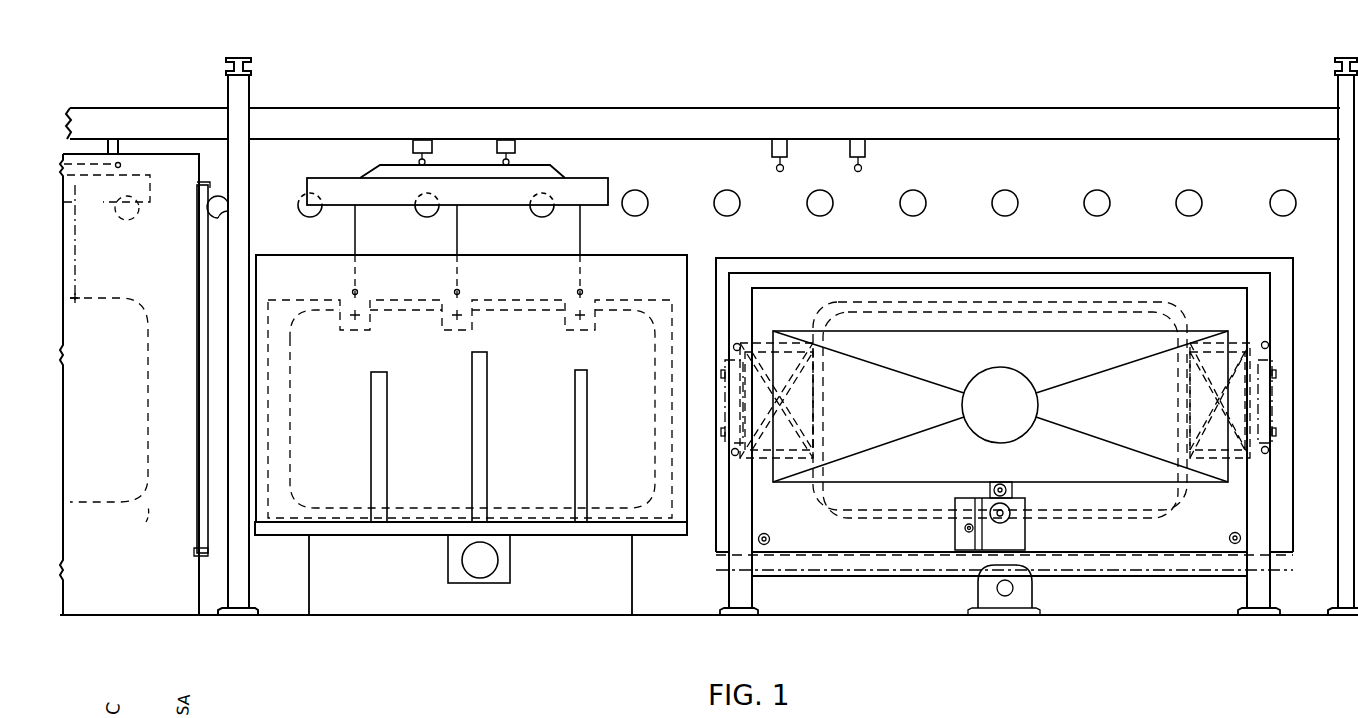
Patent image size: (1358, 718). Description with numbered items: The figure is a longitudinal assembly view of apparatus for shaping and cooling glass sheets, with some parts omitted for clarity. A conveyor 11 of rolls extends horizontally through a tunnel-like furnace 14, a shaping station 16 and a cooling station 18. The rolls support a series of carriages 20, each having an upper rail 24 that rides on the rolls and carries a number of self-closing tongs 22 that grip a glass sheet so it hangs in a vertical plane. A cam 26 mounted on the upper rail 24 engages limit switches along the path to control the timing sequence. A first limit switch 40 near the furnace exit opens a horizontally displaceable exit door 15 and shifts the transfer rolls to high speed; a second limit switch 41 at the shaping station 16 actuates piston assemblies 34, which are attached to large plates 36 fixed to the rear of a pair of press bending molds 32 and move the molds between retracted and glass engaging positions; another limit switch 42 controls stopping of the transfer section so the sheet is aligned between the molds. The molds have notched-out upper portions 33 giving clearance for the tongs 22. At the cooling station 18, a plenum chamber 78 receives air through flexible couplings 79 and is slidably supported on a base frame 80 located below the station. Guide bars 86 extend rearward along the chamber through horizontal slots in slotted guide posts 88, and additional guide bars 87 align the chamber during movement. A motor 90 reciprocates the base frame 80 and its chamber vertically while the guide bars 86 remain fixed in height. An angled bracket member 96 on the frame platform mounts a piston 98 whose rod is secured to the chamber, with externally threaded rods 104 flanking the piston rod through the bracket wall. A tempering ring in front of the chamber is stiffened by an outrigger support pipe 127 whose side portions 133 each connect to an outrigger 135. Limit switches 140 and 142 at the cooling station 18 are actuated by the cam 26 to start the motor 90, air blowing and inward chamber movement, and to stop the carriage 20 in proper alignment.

The conveyor 11 is at (653, 192).
The tunnel-like furnace 14 is at (146, 628).
The exit door 15 is at (205, 243).
The shaping station 16 is at (464, 458).
The cooling station 18 is at (1005, 443).
The carriage 20 is at (450, 166).
The tongs 22 is at (352, 302).
The upper rail 24 is at (332, 178).
The cam 26 is at (374, 166).
The press bending molds 32 is at (244, 504).
The notched-out upper portions 33 is at (566, 322).
The piston assemblies 34 is at (498, 563).
The large plates 36 is at (662, 520).
The first limit switch 40 is at (120, 152).
The second limit switch 41 is at (418, 145).
The limit switch 42 is at (503, 145).
The plenum chamber 78 is at (925, 384).
The flexible couplings 79 is at (1012, 418).
The base frame 80 is at (1150, 578).
The guide bars 86 is at (734, 344).
The additional guide bars 87 is at (770, 534).
The slotted guide posts 88 is at (729, 586).
The motor 90 is at (1032, 594).
The angled bracket member 96 is at (962, 544).
The piston 98 is at (1026, 530).
The externally threaded rods 104 is at (965, 526).
The outrigger support pipe 127 is at (890, 302).
The side portions 133 is at (818, 402).
The outrigger 135 is at (759, 343).
The limit switch 140 is at (778, 140).
The limit switch 142 is at (857, 140).